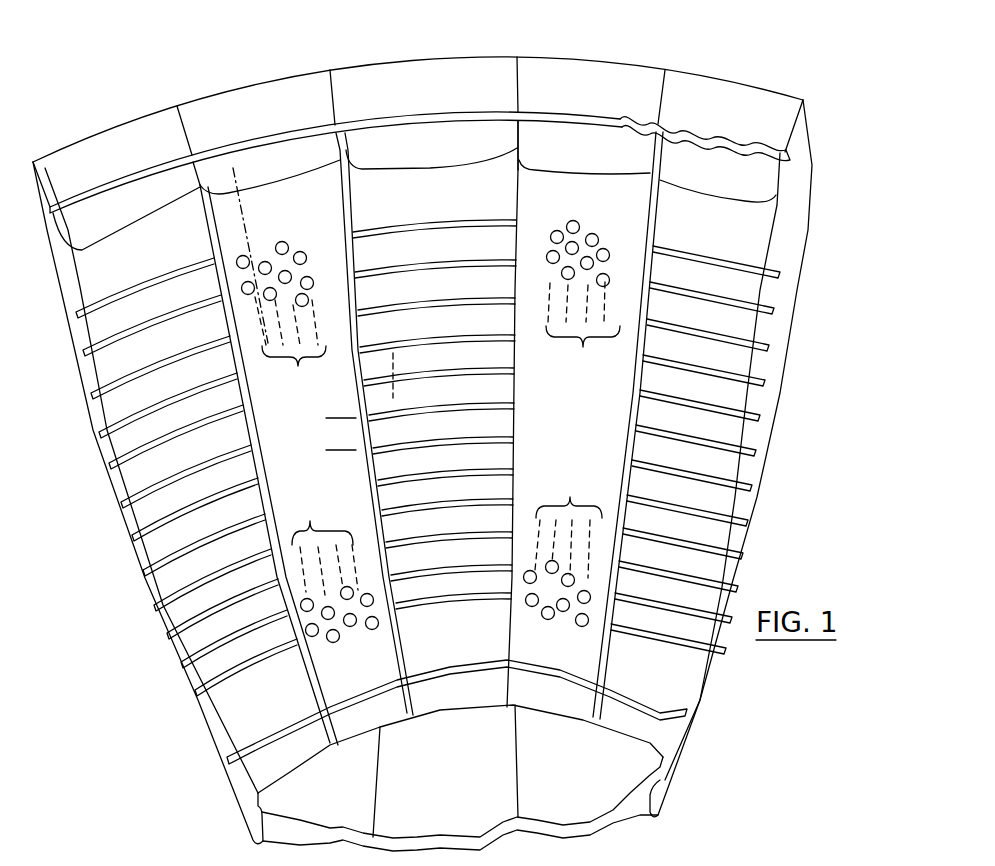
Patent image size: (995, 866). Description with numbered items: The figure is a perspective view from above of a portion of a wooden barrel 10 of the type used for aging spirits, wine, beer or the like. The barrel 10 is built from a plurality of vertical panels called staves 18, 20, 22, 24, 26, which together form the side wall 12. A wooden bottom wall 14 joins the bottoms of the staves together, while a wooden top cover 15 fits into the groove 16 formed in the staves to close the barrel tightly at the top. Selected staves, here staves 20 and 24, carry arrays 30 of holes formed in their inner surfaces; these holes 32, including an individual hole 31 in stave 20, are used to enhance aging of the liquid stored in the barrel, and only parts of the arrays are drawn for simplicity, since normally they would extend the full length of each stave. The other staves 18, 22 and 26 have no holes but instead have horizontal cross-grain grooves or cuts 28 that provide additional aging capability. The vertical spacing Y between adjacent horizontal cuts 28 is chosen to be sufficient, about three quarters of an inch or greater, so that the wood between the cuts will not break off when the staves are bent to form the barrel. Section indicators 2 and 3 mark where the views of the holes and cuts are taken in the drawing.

The wooden barrel 10 is at (807, 80).
The side wall 12 is at (757, 497).
The bottom wall 14 is at (438, 786).
The top cover 15 is at (742, 147).
The groove 16 is at (140, 163).
The stave 18 is at (152, 132).
The stave 20 is at (238, 103).
The stave 22 is at (425, 80).
The stave 24 is at (608, 78).
The stave 26 is at (742, 103).
The horizontal cross-grain cuts 28 is at (173, 327).
The arrays of holes 30 is at (298, 212).
The individual hole 31 is at (257, 243).
The holes 32 is at (437, 438).
The section line 2- 2 is at (274, 343).
The section line 3- 3 is at (393, 353).
The vertical spacing Y is at (337, 393).